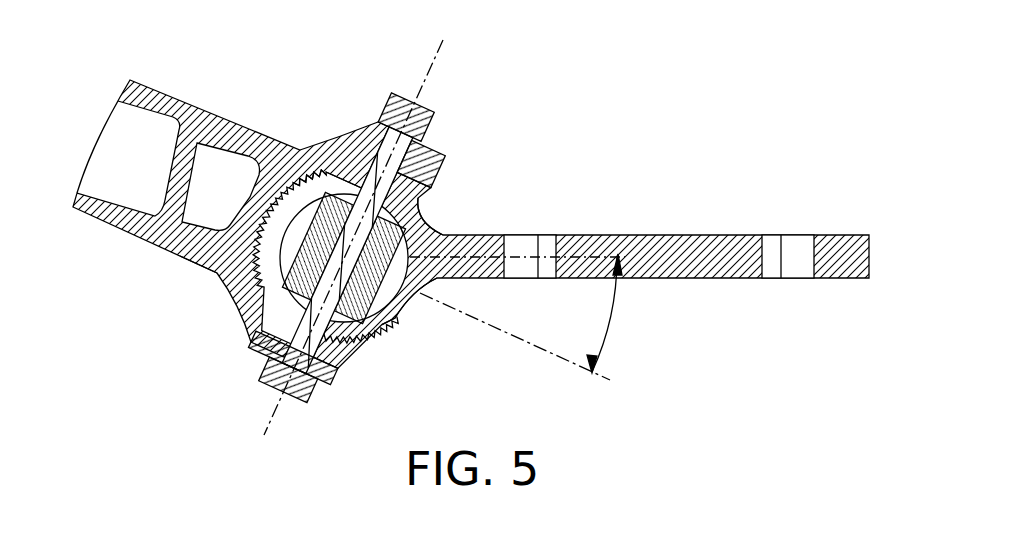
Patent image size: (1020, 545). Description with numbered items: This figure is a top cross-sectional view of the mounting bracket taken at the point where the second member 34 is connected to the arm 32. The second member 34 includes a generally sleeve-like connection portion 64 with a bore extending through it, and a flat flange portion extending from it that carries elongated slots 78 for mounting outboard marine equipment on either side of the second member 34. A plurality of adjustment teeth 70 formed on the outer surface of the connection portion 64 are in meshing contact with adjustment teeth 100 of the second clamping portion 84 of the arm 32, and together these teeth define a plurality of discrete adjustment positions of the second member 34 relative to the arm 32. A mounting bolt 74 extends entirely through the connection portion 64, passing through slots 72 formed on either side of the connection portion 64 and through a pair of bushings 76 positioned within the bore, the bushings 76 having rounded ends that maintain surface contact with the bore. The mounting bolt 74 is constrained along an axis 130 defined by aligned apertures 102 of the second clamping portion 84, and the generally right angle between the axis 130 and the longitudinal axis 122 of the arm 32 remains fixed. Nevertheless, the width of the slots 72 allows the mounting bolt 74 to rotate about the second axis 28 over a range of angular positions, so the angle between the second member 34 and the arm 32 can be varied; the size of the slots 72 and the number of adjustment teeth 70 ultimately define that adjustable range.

The second axis 28 is at (277, 310).
The arm 32 is at (84, 213).
The second member 34 is at (591, 270).
The connection portion 64 is at (410, 313).
The adjustment teeth 70 is at (363, 342).
The slots 72 is at (303, 160).
The mounting bolt 74 is at (260, 392).
The bushings 76 is at (428, 230).
The elongated slots 78 is at (556, 258).
The second clamping portion 84 is at (220, 291).
The adjustment teeth 100 is at (340, 140).
The apertures 102 is at (422, 190).
The longitudinal axis 122 is at (548, 353).
The axis 130 is at (440, 52).